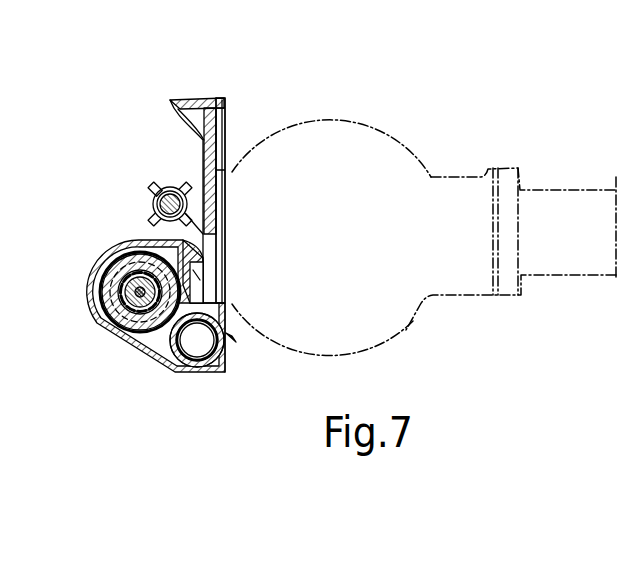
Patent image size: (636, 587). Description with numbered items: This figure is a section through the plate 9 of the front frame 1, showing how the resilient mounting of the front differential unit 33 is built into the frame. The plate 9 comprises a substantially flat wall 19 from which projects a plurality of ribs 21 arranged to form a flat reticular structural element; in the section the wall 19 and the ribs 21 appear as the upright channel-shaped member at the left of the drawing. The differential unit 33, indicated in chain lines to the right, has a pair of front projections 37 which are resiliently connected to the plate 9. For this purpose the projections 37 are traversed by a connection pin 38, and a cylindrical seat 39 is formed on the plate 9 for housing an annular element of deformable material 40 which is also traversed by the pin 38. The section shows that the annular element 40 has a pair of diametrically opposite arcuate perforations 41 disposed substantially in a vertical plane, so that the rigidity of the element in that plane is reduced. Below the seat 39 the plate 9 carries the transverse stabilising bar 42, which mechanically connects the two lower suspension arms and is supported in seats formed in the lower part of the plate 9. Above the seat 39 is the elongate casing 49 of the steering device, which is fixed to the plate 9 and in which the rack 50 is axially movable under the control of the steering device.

The front frame 1 is at (255, 92).
The plate 9 is at (233, 337).
The flat wall 19 is at (210, 147).
The ribs 21 is at (197, 104).
The front differential unit 33 is at (400, 315).
The front projections 37 is at (226, 253).
The connection pin 38 is at (197, 287).
The cylindrical seat 39 is at (88, 298).
The annular element of deformable material 40 is at (107, 253).
The arcuate perforations 41 is at (132, 237).
The transverse stabilising bar 42 is at (200, 362).
The casing 49 is at (158, 187).
The rack 50 is at (147, 186).